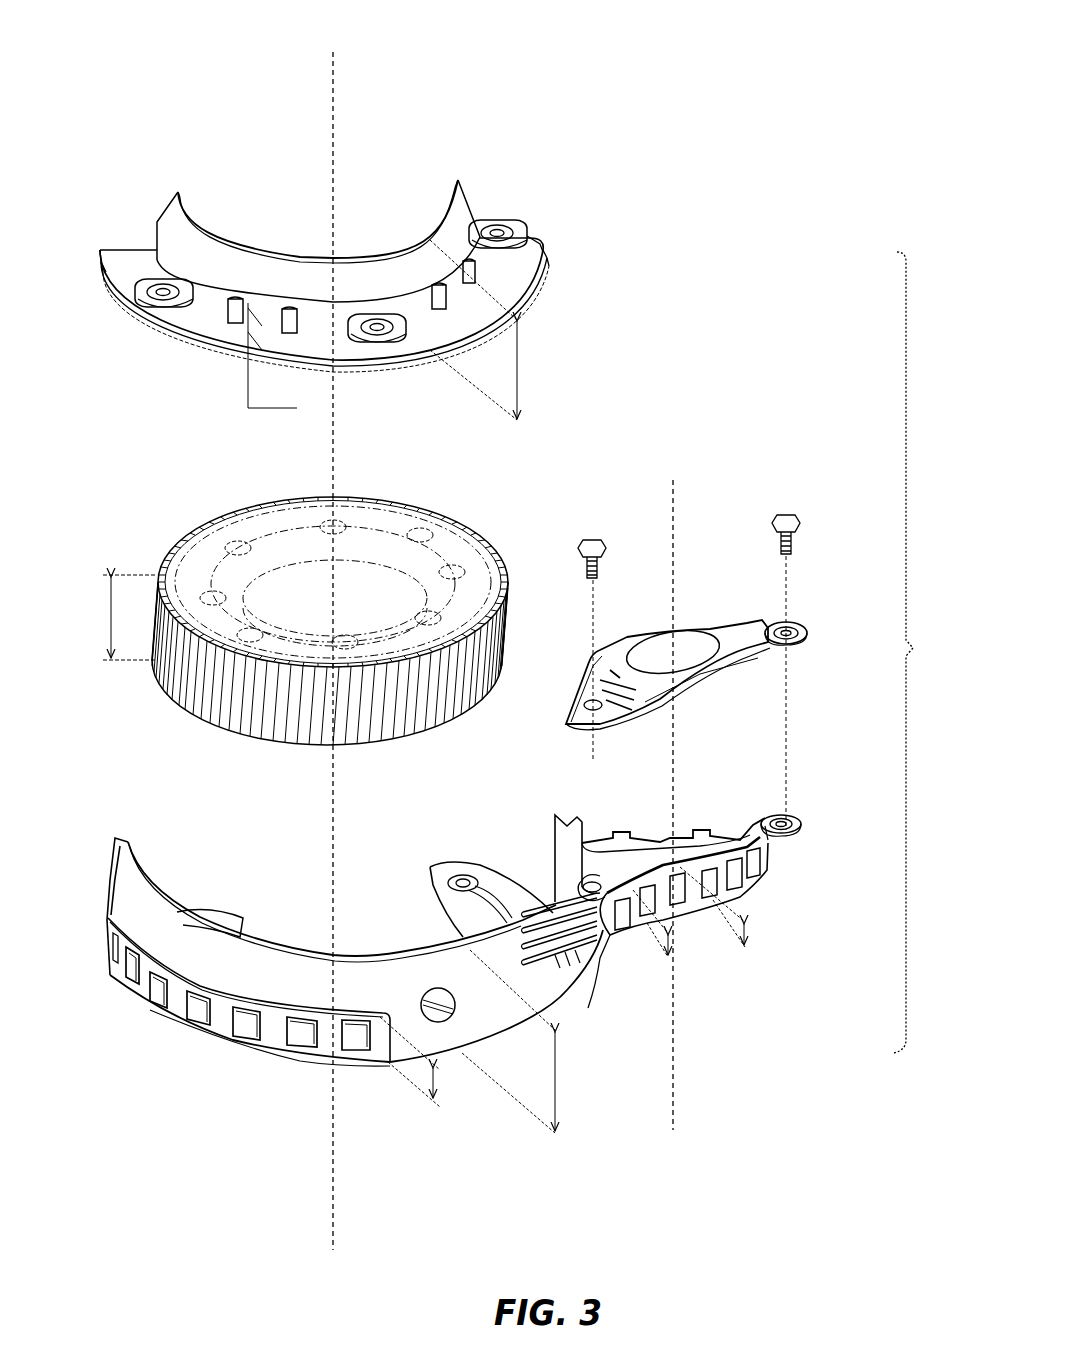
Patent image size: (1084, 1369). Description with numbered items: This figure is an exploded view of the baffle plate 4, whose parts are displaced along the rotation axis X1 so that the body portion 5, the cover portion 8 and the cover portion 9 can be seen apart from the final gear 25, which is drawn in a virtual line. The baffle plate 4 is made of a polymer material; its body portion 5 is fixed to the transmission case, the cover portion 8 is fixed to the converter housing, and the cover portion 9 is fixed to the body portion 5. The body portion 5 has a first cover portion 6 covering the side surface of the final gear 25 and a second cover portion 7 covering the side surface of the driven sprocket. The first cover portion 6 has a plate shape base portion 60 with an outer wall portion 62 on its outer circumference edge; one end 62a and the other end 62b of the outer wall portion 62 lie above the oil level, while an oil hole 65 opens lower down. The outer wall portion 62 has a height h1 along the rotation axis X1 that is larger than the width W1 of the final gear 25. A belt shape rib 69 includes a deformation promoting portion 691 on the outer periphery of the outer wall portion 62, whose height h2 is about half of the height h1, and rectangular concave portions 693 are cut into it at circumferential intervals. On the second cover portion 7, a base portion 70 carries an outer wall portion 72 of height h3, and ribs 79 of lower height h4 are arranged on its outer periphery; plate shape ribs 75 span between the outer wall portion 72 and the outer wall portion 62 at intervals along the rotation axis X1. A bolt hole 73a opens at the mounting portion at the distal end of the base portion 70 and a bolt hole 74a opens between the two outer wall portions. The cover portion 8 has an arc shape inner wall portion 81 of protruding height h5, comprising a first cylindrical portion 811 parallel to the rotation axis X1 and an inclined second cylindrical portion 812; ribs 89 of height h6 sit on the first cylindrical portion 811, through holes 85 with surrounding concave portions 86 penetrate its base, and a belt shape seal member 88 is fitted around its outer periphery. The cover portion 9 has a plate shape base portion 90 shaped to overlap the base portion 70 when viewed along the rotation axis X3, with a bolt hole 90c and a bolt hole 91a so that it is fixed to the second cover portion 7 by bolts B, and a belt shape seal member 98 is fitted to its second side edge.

The baffle plate 4 is at (922, 652).
The body portion 5 is at (746, 988).
The first cover portion 6 is at (216, 898).
The second cover portion 7 is at (632, 838).
The cover portion 8 is at (630, 266).
The cover portion 9 is at (798, 692).
The final gear 25 is at (168, 515).
The base portion 60 is at (452, 913).
The outer wall portion 62 is at (296, 945).
The one end 62a is at (560, 810).
The other end 62b is at (118, 835).
The oil hole 65 is at (421, 1000).
The belt shape rib 69 is at (170, 1016).
The deformation promoting portion 691 is at (250, 1032).
The concave portions 693 is at (157, 988).
The base portion 70 is at (723, 845).
The outer wall portion 72 is at (620, 846).
The bolt hole 73a is at (790, 822).
The bolt hole 74a is at (553, 852).
The plate shape ribs 75 is at (600, 952).
The ribs 79 is at (760, 880).
The inner wall portion 81 is at (233, 100).
The first cylindrical portion 811 is at (156, 248).
The second cylindrical portion 812 is at (193, 222).
The through holes 85 is at (489, 228).
The concave portions 86 is at (522, 236).
The belt shape seal member 88 is at (532, 283).
The ribs 89 is at (236, 297).
The base portion 90 is at (700, 642).
The bolt hole 90c is at (588, 704).
The bolt hole 91a is at (790, 636).
The belt shape seal member 98 is at (716, 690).
The bolts B is at (592, 538).
The rotation axis X1 is at (333, 629).
The rotation axis X3 is at (676, 783).
The width W1 is at (105, 617).
The height h1 is at (527, 1041).
The height h2 is at (431, 1071).
The height h3 is at (731, 916).
The height h4 is at (670, 934).
The protruding height h5 is at (499, 330).
The height h6 is at (272, 358).